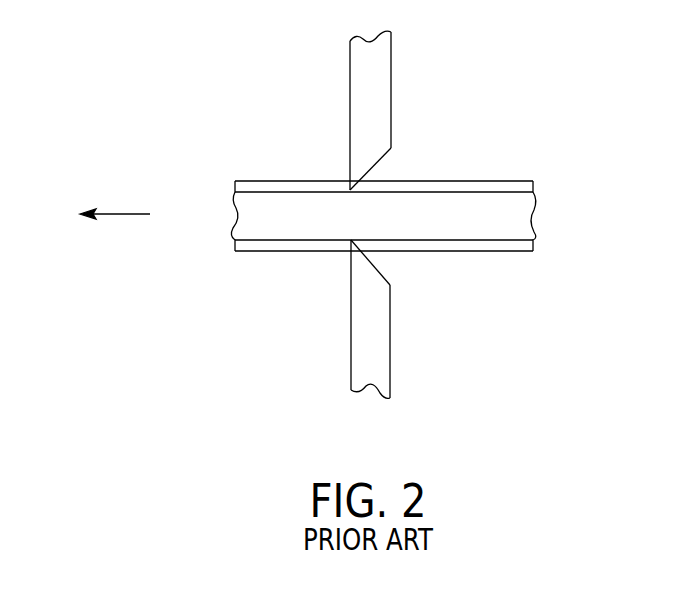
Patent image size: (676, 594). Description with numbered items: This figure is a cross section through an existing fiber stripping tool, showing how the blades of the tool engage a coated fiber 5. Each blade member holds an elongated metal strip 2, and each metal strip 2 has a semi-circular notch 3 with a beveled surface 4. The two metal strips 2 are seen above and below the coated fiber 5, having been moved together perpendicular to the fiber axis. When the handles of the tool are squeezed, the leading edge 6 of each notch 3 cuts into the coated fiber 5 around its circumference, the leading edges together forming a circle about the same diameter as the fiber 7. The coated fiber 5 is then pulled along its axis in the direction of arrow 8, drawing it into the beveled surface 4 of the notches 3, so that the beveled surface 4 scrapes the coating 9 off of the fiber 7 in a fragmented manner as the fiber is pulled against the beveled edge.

The metal strip 2 is at (392, 63).
The semi-circular notch 3 is at (381, 160).
The beveled surface 4 is at (380, 269).
The coated fiber 5 is at (237, 218).
The leading edge 6 is at (347, 190).
The fiber 7 is at (289, 204).
The arrow 8 is at (120, 215).
The coating 9 is at (257, 182).